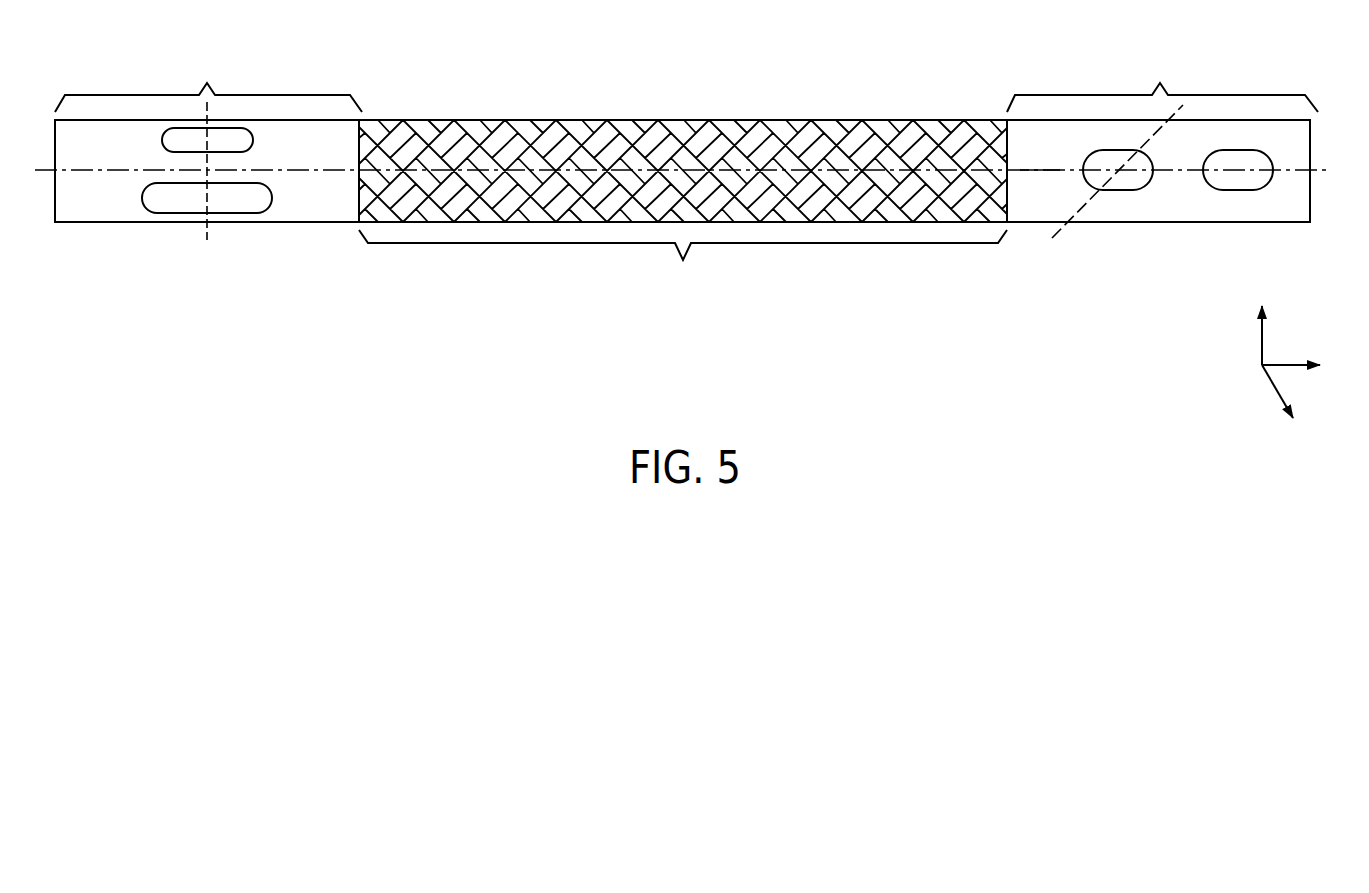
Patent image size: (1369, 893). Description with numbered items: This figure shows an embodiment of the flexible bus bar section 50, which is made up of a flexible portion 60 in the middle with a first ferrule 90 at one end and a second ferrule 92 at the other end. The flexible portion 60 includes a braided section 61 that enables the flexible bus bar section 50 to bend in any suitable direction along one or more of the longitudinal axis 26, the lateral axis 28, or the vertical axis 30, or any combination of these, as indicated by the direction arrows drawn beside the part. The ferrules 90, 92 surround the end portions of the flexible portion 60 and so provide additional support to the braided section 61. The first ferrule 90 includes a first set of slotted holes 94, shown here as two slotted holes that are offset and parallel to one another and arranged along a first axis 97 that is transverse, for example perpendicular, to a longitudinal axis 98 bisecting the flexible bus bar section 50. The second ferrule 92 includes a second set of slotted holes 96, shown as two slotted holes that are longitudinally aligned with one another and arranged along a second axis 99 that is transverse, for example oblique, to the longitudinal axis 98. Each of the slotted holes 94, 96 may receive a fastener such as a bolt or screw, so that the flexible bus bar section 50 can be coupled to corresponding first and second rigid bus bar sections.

The flexible bus bar section 50 is at (682, 150).
The flexible portion 60 is at (683, 178).
The braided section 61 is at (762, 140).
The first ferrule 90 is at (208, 166).
The second ferrule 92 is at (1162, 166).
The first set of slotted holes 94 is at (142, 198).
The second set of slotted holes 96 is at (1252, 237).
The first axis 97 is at (207, 228).
The longitudinal axis 98 is at (1038, 171).
The second axis 99 is at (1080, 210).
The longitudinal axis 26 is at (1286, 365).
The lateral axis 28 is at (1272, 390).
The vertical axis 30 is at (1262, 340).